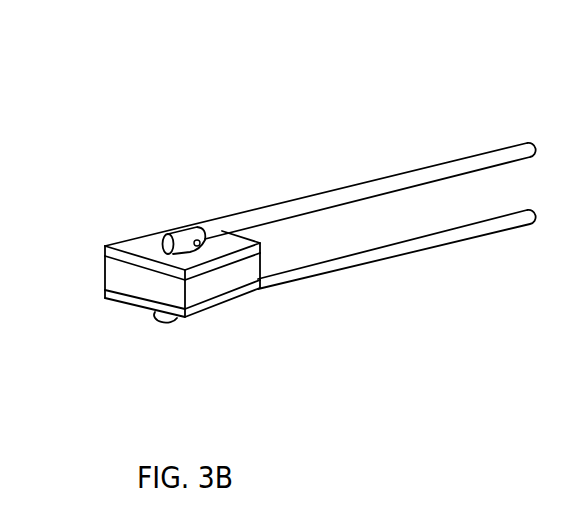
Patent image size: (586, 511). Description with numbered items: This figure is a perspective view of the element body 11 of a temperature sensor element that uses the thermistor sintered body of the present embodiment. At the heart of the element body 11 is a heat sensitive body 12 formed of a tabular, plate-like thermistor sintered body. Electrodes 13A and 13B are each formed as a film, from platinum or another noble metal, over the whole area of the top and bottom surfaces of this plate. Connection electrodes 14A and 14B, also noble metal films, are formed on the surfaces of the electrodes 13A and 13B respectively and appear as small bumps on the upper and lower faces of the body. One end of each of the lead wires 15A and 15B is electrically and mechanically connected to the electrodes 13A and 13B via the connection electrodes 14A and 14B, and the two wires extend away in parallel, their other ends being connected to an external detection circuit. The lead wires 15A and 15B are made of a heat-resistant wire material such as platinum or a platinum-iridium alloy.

The element body 11 is at (338, 93).
The heat sensitive body 12 is at (103, 278).
The electrode 13A is at (103, 249).
The electrode 13B is at (105, 295).
The connection electrode 14A is at (160, 250).
The connection electrode 14B is at (173, 318).
The lead wire 15A is at (452, 160).
The lead wire 15B is at (480, 237).